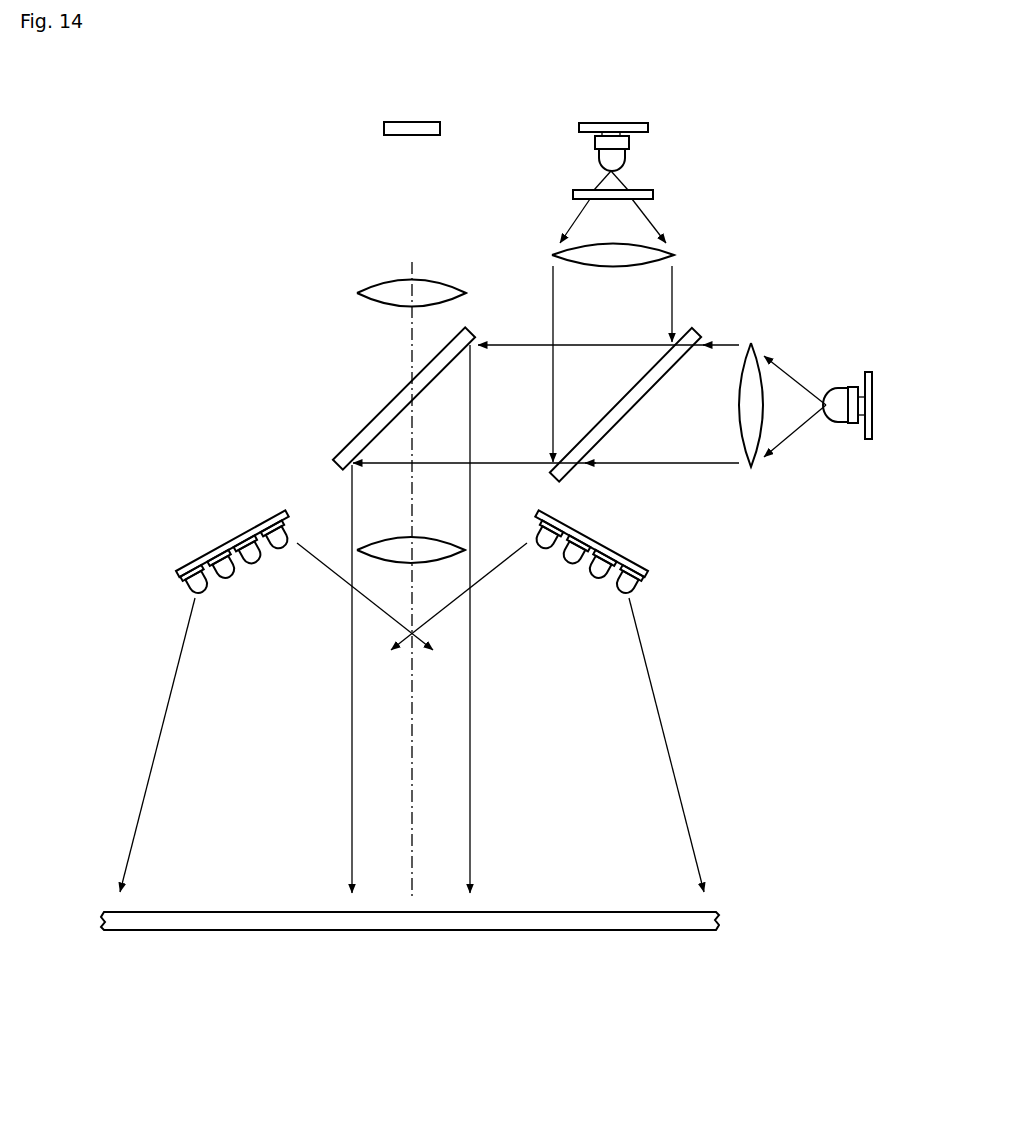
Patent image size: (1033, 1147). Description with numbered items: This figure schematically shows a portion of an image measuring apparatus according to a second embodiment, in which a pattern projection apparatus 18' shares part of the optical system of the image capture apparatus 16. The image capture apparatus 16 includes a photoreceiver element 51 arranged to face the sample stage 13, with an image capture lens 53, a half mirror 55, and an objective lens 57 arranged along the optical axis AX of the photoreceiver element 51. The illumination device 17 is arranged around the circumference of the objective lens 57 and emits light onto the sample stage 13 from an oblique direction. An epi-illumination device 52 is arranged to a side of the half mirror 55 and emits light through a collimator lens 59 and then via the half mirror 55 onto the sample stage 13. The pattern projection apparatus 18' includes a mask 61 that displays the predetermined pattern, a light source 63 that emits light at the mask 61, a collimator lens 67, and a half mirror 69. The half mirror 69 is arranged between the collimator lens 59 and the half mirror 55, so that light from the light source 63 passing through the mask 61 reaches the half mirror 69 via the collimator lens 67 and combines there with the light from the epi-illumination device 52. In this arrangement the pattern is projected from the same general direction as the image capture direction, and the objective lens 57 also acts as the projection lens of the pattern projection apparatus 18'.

The sample stage 13 is at (706, 912).
The image capture apparatus 16 is at (305, 234).
The illumination device 17 is at (228, 542).
The pattern projection apparatus 18' is at (617, 298).
The photoreceiver element 51 is at (383, 129).
The epi-illumination device 52 is at (869, 372).
The image capture lens 53 is at (357, 293).
The half mirror 55 is at (338, 455).
The objective lens 57 is at (432, 536).
The collimator lens 59 is at (752, 343).
The mask 61 is at (654, 195).
The light source 63 is at (649, 128).
The collimator lens 67 is at (675, 255).
The half mirror 69 is at (693, 327).
The optical axis AX is at (412, 777).